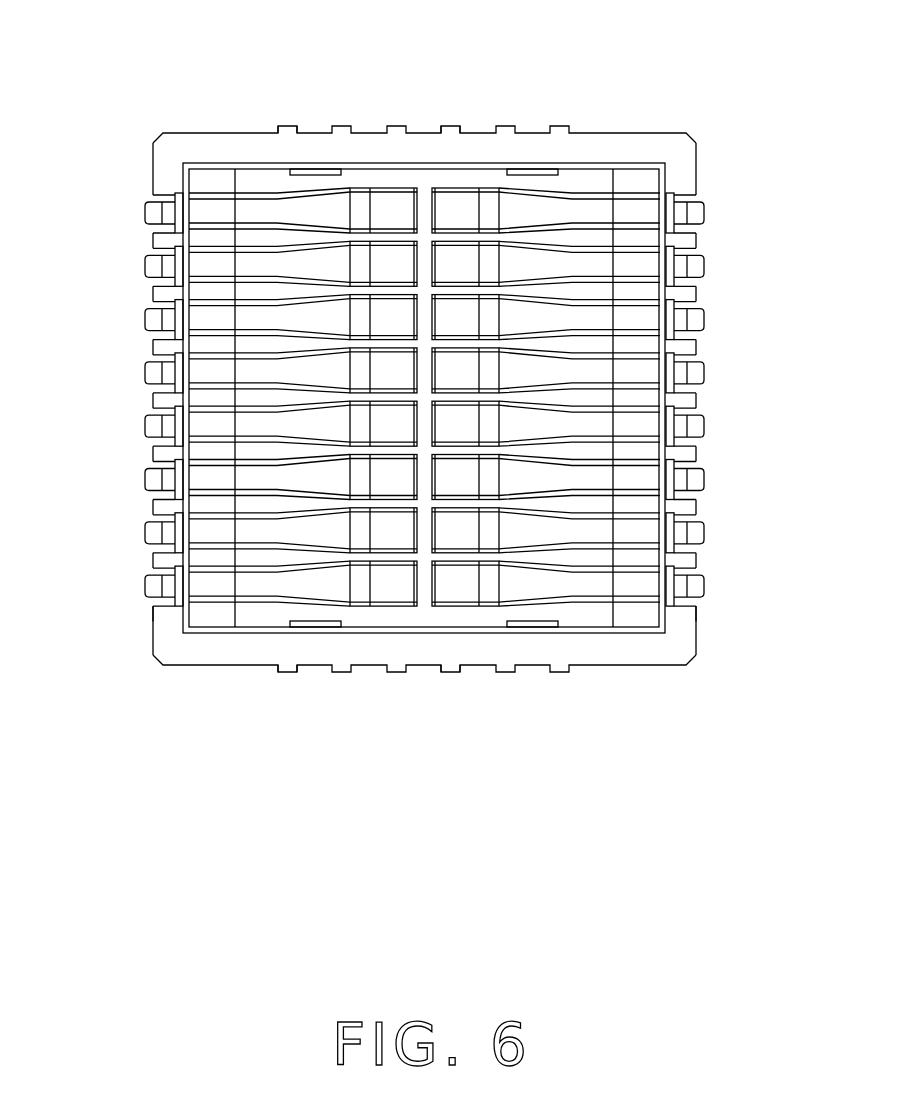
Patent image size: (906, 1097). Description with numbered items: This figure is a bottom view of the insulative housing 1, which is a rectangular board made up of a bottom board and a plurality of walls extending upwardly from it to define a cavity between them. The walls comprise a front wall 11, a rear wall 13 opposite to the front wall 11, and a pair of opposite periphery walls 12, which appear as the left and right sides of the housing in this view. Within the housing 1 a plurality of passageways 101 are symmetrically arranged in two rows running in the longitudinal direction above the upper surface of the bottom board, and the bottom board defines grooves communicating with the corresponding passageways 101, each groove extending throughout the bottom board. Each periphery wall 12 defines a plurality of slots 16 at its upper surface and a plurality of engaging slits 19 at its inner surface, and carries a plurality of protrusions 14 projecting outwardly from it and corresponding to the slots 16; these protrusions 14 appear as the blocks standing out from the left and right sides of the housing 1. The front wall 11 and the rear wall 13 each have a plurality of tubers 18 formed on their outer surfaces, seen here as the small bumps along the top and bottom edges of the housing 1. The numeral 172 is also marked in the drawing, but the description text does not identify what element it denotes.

The insulative housing 1 is at (160, 108).
The front wall 11 is at (625, 667).
The periphery wall 12 is at (697, 630).
The rear wall 13 is at (240, 133).
The protrusion 14 is at (697, 325).
The slot 16 is at (170, 481).
The tuber 18 is at (455, 130).
The engaging slit 19 is at (662, 422).
The passageway 101 is at (526, 217).
The contact portion 172 is at (212, 585).